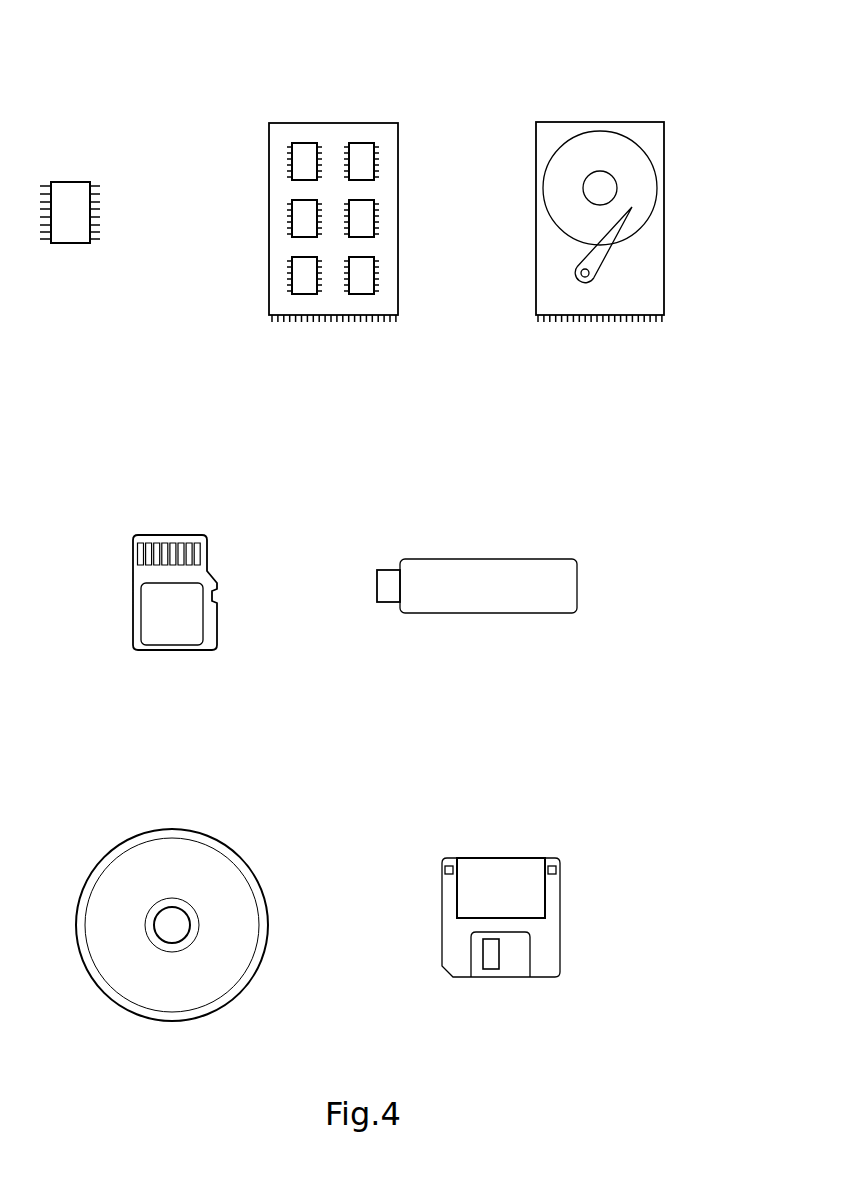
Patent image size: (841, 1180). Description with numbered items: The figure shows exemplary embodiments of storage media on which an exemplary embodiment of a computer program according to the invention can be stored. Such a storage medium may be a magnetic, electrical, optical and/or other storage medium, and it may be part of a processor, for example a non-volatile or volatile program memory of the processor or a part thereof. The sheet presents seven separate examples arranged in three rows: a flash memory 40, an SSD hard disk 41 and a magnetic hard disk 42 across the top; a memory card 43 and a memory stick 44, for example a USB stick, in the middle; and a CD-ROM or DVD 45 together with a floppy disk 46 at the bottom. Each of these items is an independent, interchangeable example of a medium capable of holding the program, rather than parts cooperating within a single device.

The flash memory 40 is at (112, 132).
The SSD hard disk 41 is at (417, 73).
The magnetic hard disk 42 is at (684, 72).
The memory card 43 is at (225, 487).
The memory stick 44 is at (587, 510).
The CD-ROM or DVD 45 is at (257, 806).
The floppy disk 46 is at (570, 808).